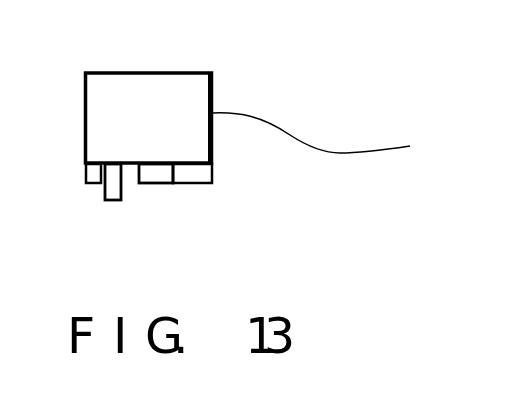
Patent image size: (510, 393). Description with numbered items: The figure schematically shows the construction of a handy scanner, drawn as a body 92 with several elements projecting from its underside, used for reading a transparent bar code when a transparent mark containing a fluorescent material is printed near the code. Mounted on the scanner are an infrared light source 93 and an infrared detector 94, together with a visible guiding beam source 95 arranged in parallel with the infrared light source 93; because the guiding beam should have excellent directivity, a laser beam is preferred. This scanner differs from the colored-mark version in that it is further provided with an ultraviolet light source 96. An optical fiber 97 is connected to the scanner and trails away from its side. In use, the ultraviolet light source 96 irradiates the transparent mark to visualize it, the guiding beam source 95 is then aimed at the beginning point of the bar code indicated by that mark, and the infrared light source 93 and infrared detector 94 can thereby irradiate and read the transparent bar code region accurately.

The semiconductor package body 92 is at (135, 66).
The infrared light source 93 is at (115, 207).
The infrared detector 94 is at (174, 191).
The visible guiding beam source 95 is at (84, 190).
The ultraviolet light source 96 is at (218, 192).
The optical fiber 97 is at (385, 152).